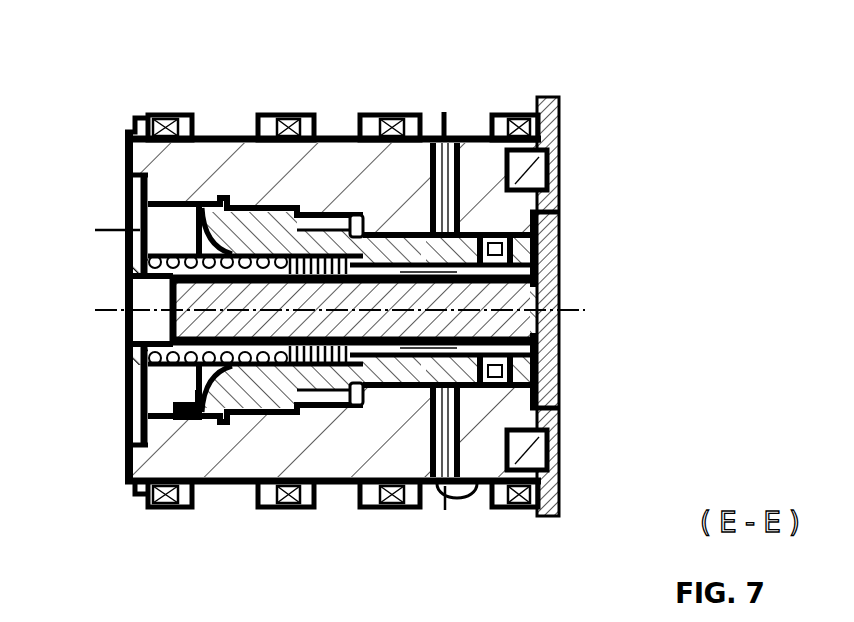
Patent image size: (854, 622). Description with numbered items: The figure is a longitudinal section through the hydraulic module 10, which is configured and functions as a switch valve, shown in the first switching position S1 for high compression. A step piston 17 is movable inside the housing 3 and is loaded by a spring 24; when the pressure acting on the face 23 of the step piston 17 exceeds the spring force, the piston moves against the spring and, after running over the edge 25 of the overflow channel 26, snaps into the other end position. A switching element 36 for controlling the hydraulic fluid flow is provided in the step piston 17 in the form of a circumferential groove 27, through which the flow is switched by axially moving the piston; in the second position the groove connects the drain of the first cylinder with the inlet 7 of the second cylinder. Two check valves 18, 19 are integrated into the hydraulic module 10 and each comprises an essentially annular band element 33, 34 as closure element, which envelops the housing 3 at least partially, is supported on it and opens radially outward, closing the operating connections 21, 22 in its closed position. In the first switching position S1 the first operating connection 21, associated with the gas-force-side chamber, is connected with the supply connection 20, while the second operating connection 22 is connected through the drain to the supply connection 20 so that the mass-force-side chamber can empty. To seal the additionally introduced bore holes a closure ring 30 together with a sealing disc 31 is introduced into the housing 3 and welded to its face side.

The housing 3 is at (342, 303).
The inlet of the second cylinder 7 is at (438, 157).
The hydraulic module 10 is at (411, 303).
The step piston 17 is at (172, 406).
The check valve 18 is at (218, 118).
The check valve 19 is at (473, 118).
The supply connection 20 is at (320, 495).
The first operating connection 21 is at (195, 493).
The second operating connection 22 is at (423, 495).
The face of the step piston 23 is at (347, 488).
The spring 24 is at (135, 243).
The edge of the overflow channel 25 is at (330, 196).
The overflow channel 26 is at (247, 487).
The circumferential groove 27 is at (498, 250).
The closure ring 30 is at (560, 447).
The sealing disc 31 is at (560, 473).
The band element 33 is at (246, 75).
The band element 34 is at (454, 75).
The switching element 36 is at (508, 207).
The first switching position S1 is at (675, 285).